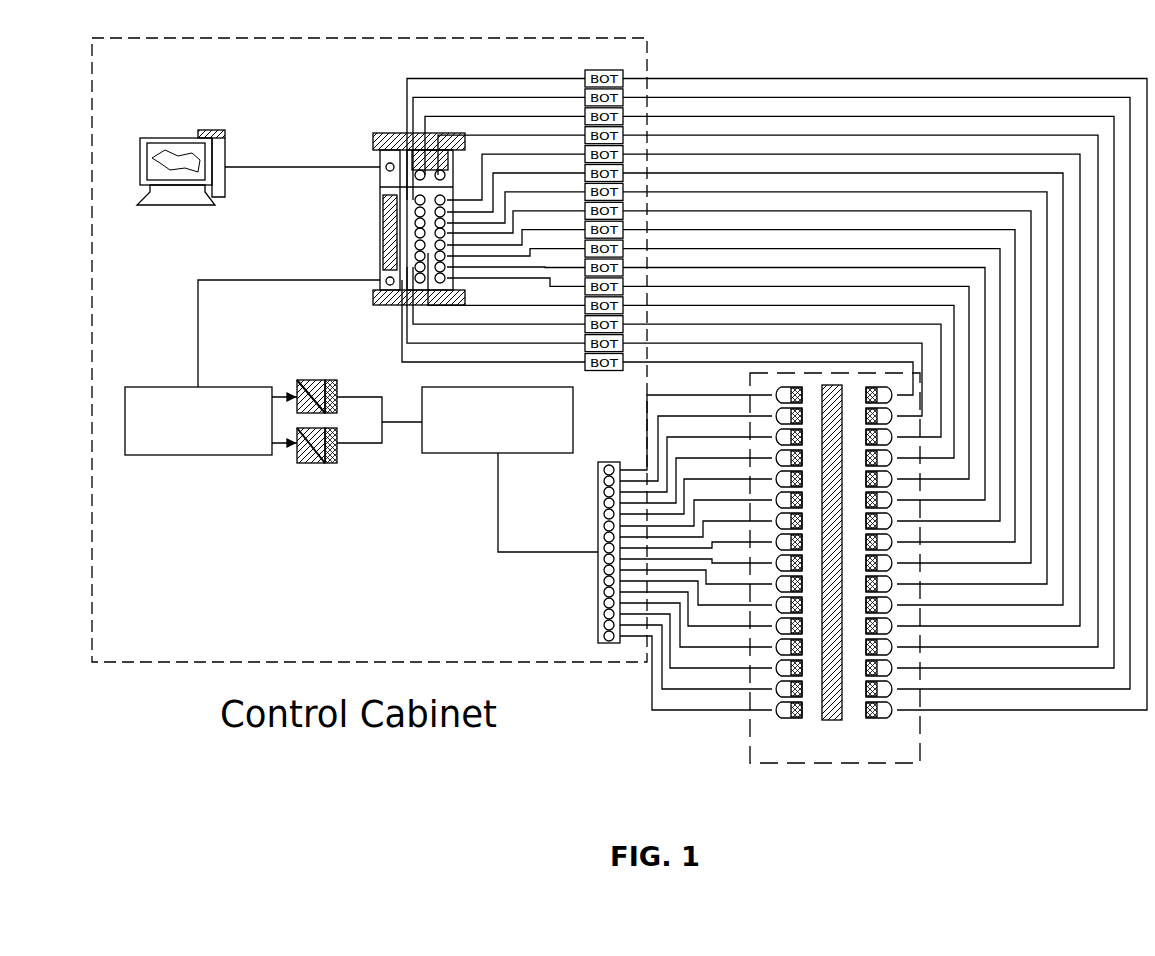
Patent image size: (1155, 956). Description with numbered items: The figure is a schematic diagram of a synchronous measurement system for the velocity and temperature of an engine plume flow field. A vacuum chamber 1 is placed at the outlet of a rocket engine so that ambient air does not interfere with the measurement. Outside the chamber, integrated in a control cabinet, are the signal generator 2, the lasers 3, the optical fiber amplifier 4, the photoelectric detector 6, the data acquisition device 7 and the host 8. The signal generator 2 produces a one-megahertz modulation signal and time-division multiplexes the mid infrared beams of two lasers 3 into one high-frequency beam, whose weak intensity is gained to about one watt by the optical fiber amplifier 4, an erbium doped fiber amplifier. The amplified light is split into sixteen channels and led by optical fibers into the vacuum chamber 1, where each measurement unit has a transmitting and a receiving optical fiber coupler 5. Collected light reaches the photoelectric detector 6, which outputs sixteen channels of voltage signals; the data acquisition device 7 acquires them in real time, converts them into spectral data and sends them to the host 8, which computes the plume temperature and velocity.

The vacuum chamber 1 is at (835, 600).
The signal generator 2 is at (198, 461).
The laser 3 is at (314, 458).
The optical fiber amplifier 4 is at (497, 452).
The optical fiber coupler 5 is at (791, 579).
The photoelectric detector 6 is at (604, 251).
The data acquisition device 7 is at (415, 244).
The host 8 is at (181, 199).